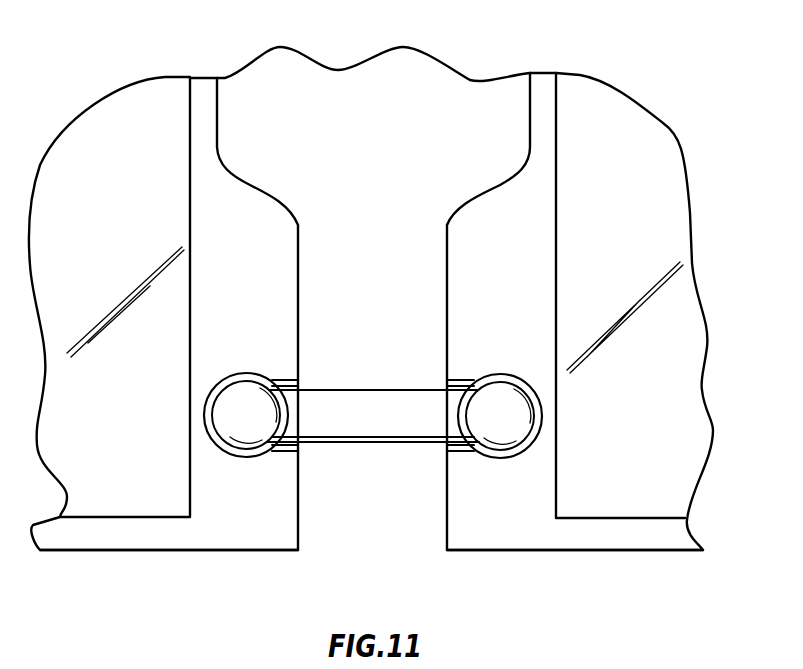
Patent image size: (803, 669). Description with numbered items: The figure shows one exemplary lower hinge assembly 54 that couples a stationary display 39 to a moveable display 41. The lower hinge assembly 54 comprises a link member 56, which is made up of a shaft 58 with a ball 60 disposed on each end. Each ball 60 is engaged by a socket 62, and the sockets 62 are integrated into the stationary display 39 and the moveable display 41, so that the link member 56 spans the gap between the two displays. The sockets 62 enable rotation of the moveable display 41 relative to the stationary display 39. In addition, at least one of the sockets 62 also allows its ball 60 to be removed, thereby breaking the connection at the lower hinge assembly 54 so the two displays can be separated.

The stationary display 39 is at (247, 207).
The moveable display 41 is at (523, 192).
The lower hinge assembly 54 is at (372, 522).
The link member 56 is at (385, 413).
The shaft 58 is at (345, 425).
The ball 60 is at (260, 433).
The socket 62 is at (255, 373).